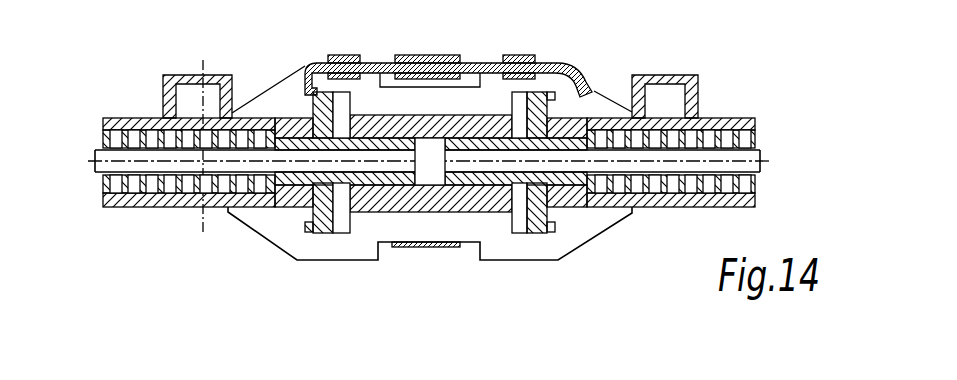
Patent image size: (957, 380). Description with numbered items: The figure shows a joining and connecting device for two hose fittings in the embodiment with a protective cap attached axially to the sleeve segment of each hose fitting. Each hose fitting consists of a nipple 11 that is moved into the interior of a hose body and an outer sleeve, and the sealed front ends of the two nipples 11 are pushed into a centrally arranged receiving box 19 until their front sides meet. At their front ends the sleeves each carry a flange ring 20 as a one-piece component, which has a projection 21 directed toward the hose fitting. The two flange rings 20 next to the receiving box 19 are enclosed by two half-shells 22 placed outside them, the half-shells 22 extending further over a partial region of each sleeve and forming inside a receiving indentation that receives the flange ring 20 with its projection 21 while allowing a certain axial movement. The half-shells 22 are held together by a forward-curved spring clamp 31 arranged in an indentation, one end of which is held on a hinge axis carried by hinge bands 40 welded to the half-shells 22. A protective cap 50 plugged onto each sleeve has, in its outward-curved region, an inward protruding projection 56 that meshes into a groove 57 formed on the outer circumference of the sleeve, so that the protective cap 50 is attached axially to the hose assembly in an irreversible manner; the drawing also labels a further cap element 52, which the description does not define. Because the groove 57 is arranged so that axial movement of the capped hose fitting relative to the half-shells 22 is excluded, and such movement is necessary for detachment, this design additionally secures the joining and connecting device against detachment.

The nipple 11 is at (352, 172).
The receiving box 19 is at (427, 199).
The flange ring 20 is at (325, 223).
The projection 21 is at (310, 233).
The half-shells 22 is at (503, 243).
The spring clamp 31 is at (413, 55).
The hinge bands 40 is at (532, 56).
The protective cap 50 is at (232, 75).
The cover plate 52 is at (481, 62).
The projection 56 is at (189, 153).
The groove 57 is at (197, 124).